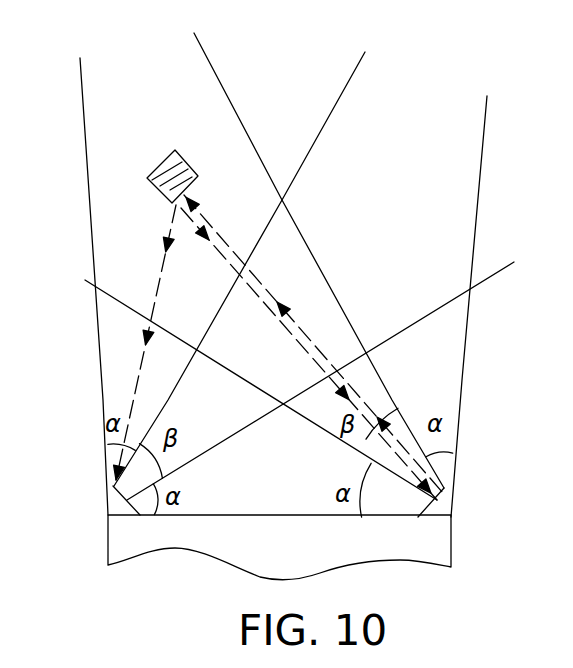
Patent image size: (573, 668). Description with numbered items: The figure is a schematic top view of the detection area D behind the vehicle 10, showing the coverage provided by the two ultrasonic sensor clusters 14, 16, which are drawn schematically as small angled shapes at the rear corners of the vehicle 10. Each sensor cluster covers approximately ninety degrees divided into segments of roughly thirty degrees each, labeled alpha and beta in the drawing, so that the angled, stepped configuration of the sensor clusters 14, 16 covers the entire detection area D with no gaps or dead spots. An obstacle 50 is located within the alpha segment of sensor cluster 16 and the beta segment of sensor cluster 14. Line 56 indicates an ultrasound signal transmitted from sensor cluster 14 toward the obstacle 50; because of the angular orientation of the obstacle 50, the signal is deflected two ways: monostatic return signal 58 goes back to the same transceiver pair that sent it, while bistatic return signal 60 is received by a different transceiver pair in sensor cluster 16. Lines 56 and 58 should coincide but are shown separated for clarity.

The vehicle 10 is at (368, 543).
The sensor cluster 14 is at (442, 507).
The sensor cluster 16 is at (117, 505).
The obstacle 50 is at (155, 169).
The transmitted ultrasound signal 56 is at (259, 284).
The monostatic return signal 58 is at (269, 300).
The bistatic return signal 60 is at (158, 288).
The detection area D is at (457, 197).